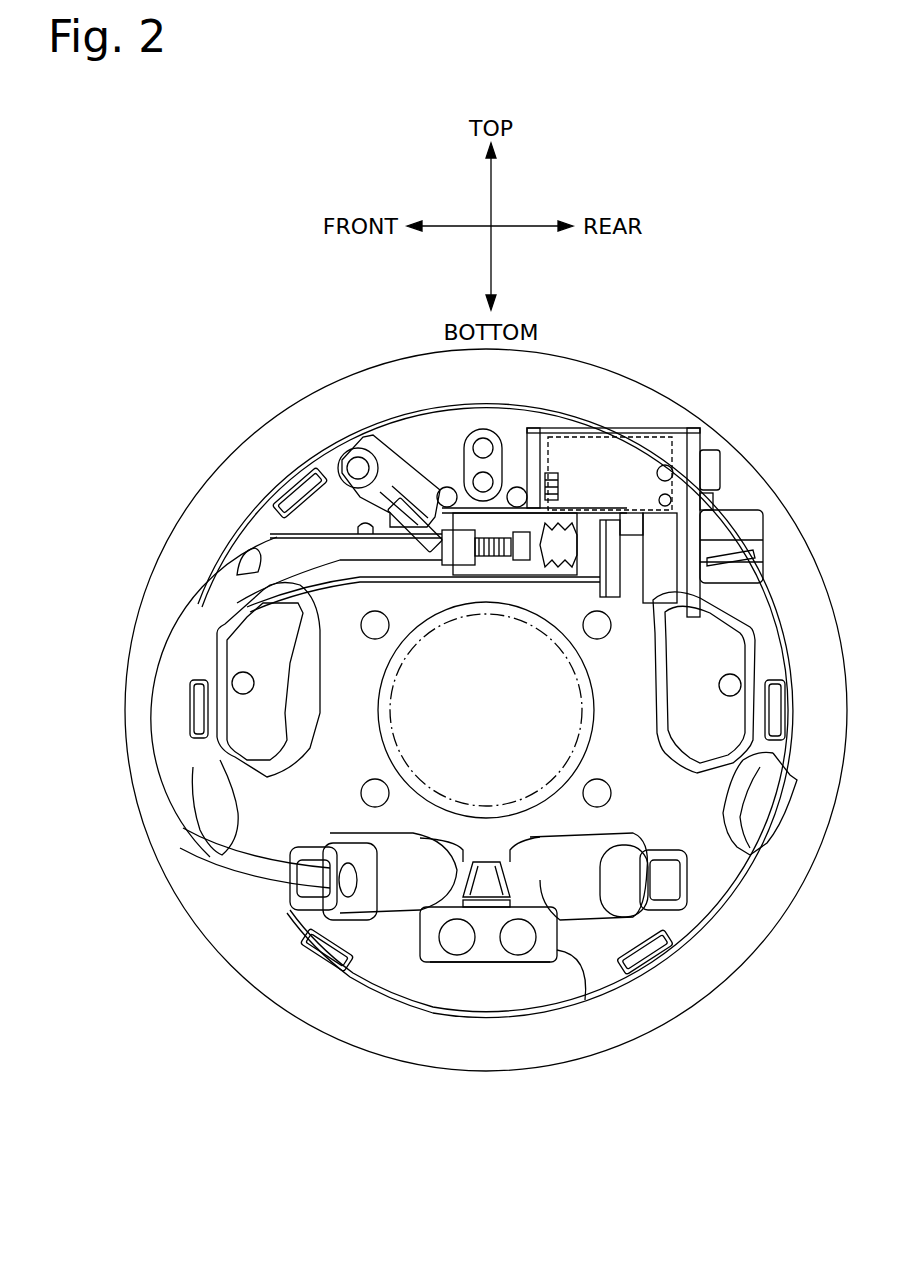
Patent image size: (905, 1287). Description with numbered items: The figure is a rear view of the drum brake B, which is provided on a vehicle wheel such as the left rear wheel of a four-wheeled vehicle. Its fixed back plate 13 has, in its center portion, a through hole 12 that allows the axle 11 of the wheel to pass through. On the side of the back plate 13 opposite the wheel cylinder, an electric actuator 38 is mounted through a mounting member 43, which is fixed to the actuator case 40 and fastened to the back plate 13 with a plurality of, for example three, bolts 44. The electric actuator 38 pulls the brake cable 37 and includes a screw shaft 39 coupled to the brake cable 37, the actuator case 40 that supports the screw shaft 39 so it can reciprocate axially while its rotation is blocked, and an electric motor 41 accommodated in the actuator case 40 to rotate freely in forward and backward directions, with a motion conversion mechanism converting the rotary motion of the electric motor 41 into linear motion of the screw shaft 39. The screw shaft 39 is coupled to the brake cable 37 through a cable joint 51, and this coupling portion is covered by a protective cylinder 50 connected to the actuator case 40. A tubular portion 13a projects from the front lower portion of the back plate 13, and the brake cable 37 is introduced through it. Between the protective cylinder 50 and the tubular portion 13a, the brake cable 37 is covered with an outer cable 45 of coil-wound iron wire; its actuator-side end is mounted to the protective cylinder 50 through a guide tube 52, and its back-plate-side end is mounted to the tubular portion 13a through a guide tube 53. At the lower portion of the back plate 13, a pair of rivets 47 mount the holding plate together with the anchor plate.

The axle 11 is at (383, 762).
The through hole 12 is at (583, 745).
The back plate 13 is at (694, 1005).
The tubular portion 13a is at (393, 903).
The brake cable 37 is at (490, 478).
The electric actuator 38 is at (606, 420).
The screw shaft 39 is at (548, 575).
The actuator case 40 is at (633, 573).
The electric motor 41 is at (640, 436).
The mounting member 43 is at (416, 510).
The bolts 44 is at (365, 455).
The outer cable 45 is at (277, 563).
The rivets 47 is at (467, 945).
The protective cylinder 50 is at (583, 525).
The cable joint 51 is at (520, 556).
The guide tube 52 is at (463, 550).
The guide tube 53 is at (335, 868).
The drum brake B is at (391, 1077).